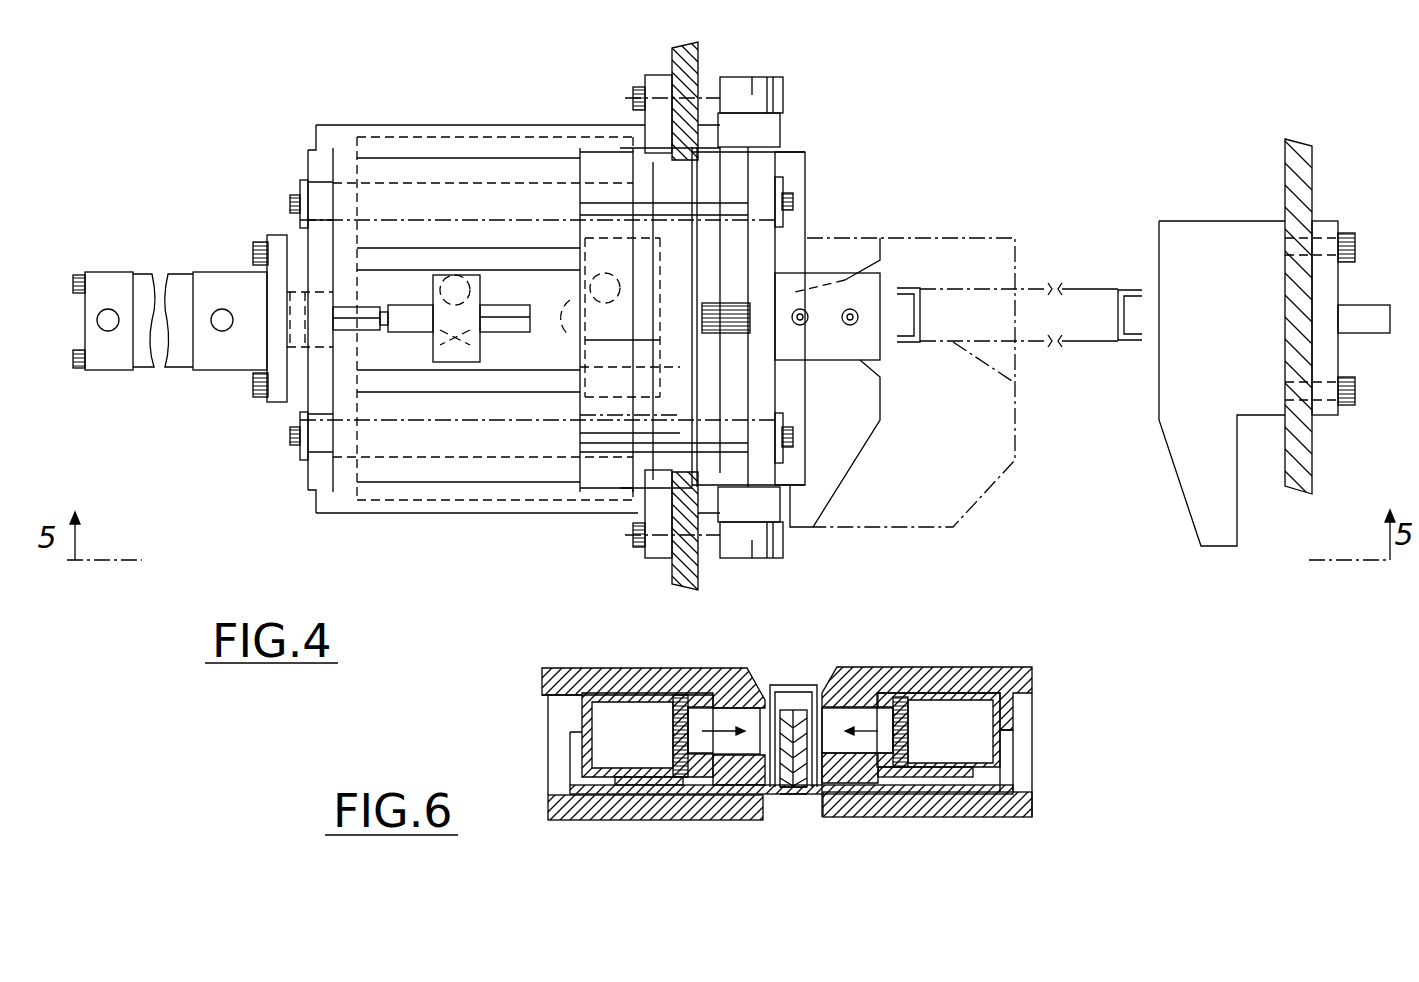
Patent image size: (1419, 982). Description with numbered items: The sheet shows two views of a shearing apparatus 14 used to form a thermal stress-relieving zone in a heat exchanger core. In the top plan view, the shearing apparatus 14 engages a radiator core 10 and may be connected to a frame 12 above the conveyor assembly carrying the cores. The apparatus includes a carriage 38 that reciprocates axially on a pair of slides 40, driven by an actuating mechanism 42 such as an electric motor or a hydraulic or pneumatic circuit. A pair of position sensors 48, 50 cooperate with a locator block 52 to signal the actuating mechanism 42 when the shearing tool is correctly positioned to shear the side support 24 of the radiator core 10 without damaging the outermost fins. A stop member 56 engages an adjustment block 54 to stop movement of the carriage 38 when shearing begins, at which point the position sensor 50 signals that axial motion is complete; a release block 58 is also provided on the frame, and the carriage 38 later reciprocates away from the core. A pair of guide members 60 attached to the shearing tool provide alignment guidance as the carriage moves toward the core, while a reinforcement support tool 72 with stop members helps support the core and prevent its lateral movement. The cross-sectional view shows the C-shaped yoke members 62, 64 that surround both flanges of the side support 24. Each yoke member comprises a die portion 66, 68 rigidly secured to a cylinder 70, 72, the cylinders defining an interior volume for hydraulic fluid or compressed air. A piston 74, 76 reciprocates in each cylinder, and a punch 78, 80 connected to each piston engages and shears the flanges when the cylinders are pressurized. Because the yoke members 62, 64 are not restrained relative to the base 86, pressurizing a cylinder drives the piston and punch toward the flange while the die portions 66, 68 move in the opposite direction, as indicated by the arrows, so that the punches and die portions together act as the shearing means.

In FIG. 4, the radiator core 10 is at (1080, 290).
In FIG. 4, the frame 12 is at (1316, 458).
In FIG. 4, the shearing apparatus 14 is at (810, 112).
In FIG. 4, the side support 24 is at (907, 288).
In FIG. 6, the side support 24 is at (810, 688).
In FIG. 4, the carriage 38 is at (443, 467).
In FIG. 4, the slides 40 is at (605, 185).
In FIG. 4, the actuating mechanism 42 is at (217, 271).
In FIG. 4, the position sensor 48 is at (452, 275).
In FIG. 4, the position sensor 50 is at (600, 273).
In FIG. 4, the locator block 52 is at (443, 352).
In FIG. 4, the adjustment block 54 is at (513, 325).
In FIG. 4, the stop member 56 is at (727, 313).
In FIG. 4, the release block 58 is at (850, 277).
In FIG. 4, the guide members 60 is at (827, 482).
In FIG. 6, the C-shaped yoke member 62 is at (572, 773).
In FIG. 6, the C-shaped yoke member 64 is at (1007, 782).
In FIG. 6, the die portion 66 is at (787, 778).
In FIG. 6, the die portion 68 is at (803, 777).
In FIG. 6, the cylinder 70 is at (625, 695).
In FIG. 4, the cylinder 72 is at (1208, 221).
In FIG. 6, the cylinder 72 is at (1003, 670).
In FIG. 6, the piston 74 is at (680, 707).
In FIG. 6, the piston 76 is at (910, 717).
In FIG. 6, the punch 78 is at (748, 682).
In FIG. 6, the punch 80 is at (858, 710).
In FIG. 6, the base 86 is at (650, 817).